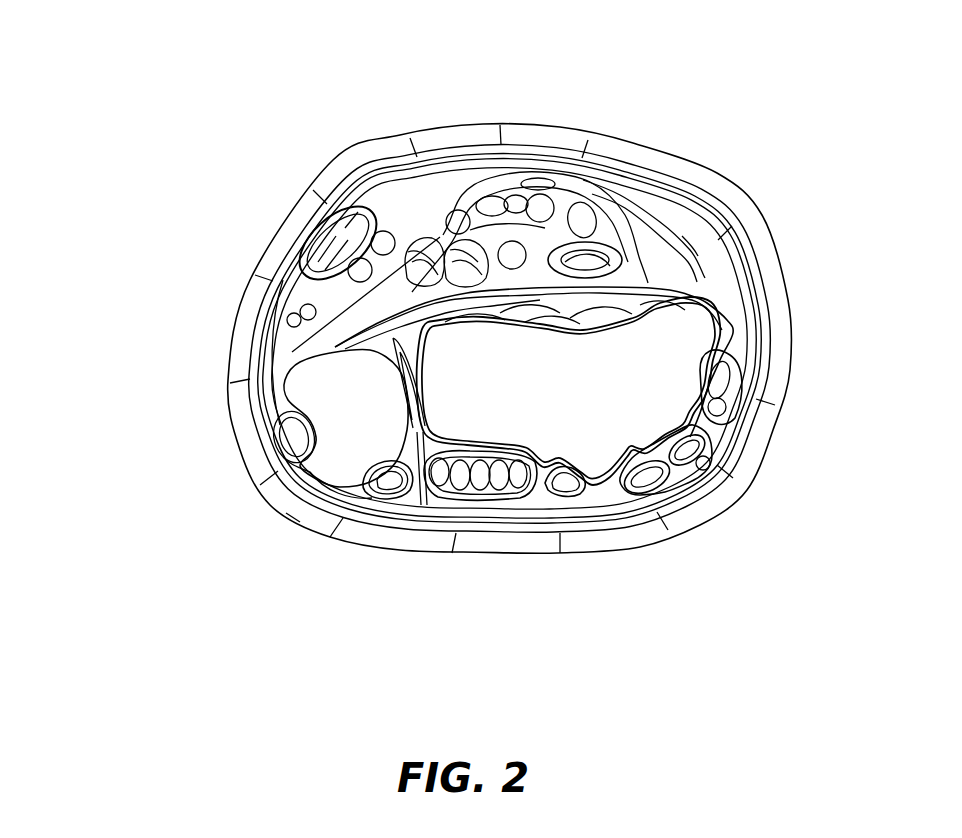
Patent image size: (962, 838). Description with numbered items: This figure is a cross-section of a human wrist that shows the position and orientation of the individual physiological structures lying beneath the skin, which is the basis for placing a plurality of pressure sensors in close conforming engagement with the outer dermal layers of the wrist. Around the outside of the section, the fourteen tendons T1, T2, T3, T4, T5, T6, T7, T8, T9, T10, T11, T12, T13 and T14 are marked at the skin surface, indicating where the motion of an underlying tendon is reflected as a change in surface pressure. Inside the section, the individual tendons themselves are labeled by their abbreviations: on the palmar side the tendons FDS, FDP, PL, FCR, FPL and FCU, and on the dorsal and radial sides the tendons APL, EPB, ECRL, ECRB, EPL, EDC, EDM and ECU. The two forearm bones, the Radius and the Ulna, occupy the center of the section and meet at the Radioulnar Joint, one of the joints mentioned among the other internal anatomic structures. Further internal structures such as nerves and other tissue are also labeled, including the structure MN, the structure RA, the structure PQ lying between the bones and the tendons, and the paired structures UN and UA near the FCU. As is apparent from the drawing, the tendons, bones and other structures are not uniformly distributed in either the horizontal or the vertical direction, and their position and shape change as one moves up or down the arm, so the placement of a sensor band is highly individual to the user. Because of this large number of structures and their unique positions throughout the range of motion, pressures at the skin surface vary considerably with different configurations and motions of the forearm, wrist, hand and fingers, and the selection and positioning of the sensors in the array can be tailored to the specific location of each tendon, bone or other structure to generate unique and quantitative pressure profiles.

The tendon T1 is at (186, 242).
The tendon T2 is at (322, 114).
The tendon T3 is at (430, 90).
The tendon T4 is at (531, 84).
The tendon T5 is at (657, 111).
The tendon T6 is at (770, 188).
The tendon T7 is at (845, 368).
The tendon T8 is at (819, 480).
The tendon T9 is at (757, 552).
The tendon T10 is at (675, 587).
The tendon T11 is at (542, 620).
The tendon T12 is at (406, 612).
The tendon T13 is at (303, 589).
The tendon T14 is at (135, 433).
The flexor digitorum superficialis FDS is at (500, 182).
The flexor digitorum profundus FDP is at (450, 205).
The palmaris longus PL is at (547, 182).
The median nerve MN is at (596, 212).
The flexor carpi radialis FCR is at (640, 200).
The flexor pollicis longus FPL is at (623, 258).
The radial artery RA is at (690, 243).
The radius bone Radius is at (708, 335).
The abductor pollicis longus APL is at (748, 393).
The extensor pollicis brevis EPB is at (747, 420).
The extensor carpi radialis longus ECRL is at (730, 478).
The extensor carpi radialis brevis ECRB is at (660, 500).
The extensor pollicis longus EPL is at (580, 497).
The extensor digitorum communis EDC is at (518, 493).
The extensor digiti minimi EDM is at (375, 500).
The distal radioulnar joint Radioulnar Joint is at (420, 437).
The extensor carpi ulnaris ECU is at (283, 440).
The ulna bone Ulna is at (283, 395).
The pronator quadratus PQ is at (370, 325).
The flexor carpi ulnaris FCU is at (312, 236).
The ulnar nerve and ulnar artery UN and UA is at (377, 243).